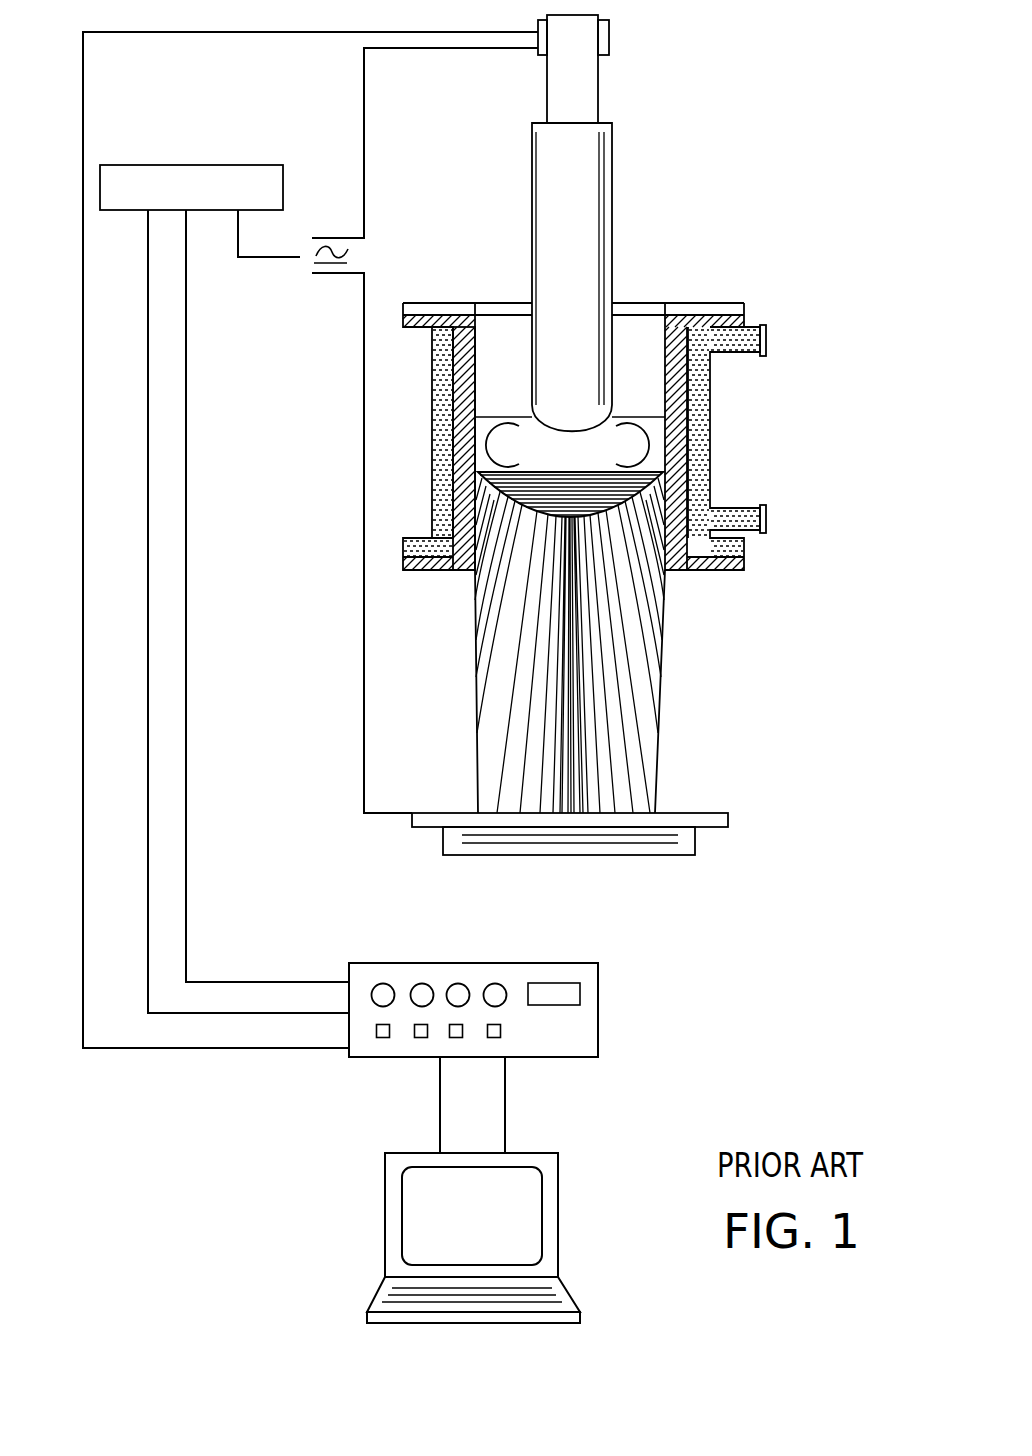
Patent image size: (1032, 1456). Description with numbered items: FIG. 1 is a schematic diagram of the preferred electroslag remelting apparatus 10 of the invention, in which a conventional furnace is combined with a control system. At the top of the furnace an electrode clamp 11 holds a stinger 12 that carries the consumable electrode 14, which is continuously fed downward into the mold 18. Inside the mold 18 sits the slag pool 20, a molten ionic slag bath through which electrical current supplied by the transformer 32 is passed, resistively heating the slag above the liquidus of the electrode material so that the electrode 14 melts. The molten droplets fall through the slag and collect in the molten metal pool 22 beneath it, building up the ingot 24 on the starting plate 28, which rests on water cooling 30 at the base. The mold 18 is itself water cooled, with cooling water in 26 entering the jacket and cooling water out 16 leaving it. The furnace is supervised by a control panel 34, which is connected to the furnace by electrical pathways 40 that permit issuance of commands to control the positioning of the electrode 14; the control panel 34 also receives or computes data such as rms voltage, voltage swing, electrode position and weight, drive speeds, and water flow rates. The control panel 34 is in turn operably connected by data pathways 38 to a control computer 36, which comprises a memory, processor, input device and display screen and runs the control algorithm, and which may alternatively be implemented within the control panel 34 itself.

The apparatus 10 is at (738, 146).
The electrode clamp 11 is at (610, 37).
The stinger 12 is at (598, 88).
The electrode 14 is at (612, 235).
The cooling water out 16 is at (766, 342).
The mold 18 is at (678, 380).
The slag pool 20 is at (637, 447).
The molten metal pool 22 is at (657, 492).
The ingot 24 is at (625, 590).
The cooling water in 26 is at (766, 516).
The starting plate 28 is at (702, 808).
The water cooling 30 is at (695, 843).
The transformer 32 is at (188, 165).
The control panel 34 is at (598, 978).
The control computer 36 is at (558, 1182).
The data pathways 38 is at (442, 1088).
The electrical pathways 40 is at (180, 1048).